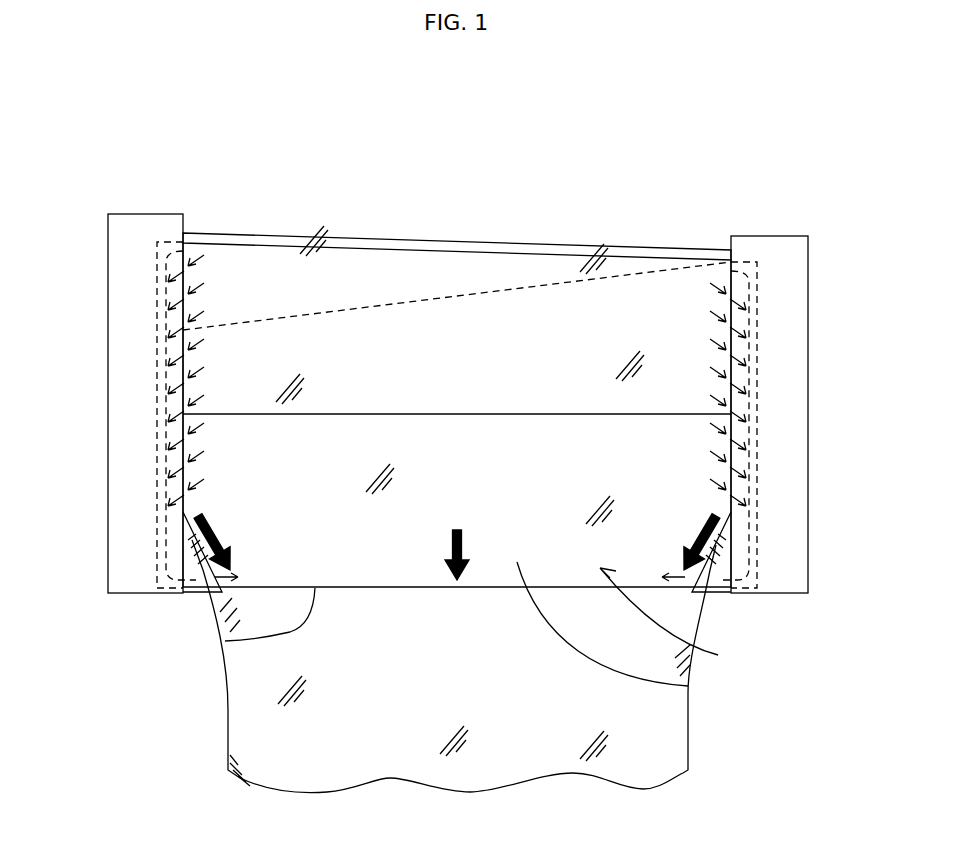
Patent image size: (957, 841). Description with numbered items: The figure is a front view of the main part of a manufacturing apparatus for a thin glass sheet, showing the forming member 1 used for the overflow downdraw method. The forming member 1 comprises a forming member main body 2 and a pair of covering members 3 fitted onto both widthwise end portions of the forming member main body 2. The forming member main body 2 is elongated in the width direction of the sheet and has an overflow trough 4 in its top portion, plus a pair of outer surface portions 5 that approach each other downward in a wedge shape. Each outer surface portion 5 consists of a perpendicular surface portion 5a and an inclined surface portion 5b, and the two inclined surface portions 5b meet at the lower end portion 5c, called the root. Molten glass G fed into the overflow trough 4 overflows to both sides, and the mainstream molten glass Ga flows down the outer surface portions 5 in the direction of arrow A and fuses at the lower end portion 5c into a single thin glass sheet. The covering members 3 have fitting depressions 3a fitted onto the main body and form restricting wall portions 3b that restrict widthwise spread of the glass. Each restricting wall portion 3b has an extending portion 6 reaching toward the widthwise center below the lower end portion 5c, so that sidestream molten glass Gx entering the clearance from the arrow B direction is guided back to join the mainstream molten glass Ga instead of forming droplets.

The forming member 1 is at (799, 192).
The forming member main body 2 is at (370, 222).
The covering member 3 is at (120, 380).
The fitting depression 3a is at (160, 284).
The restricting wall portion 3b is at (190, 362).
The overflow trough 4 is at (430, 303).
The outer surface portion 5 is at (253, 268).
The perpendicular surface portion 5a is at (640, 300).
The inclined surface portion 5b is at (672, 616).
The lower end portion 5c is at (225, 641).
The extending portion 6 is at (200, 585).
The arrow A is at (220, 530).
The arrow B is at (214, 460).
The molten glass G is at (525, 245).
The mainstream molten glass Ga is at (690, 686).
The sidestream molten glass Gx is at (160, 540).